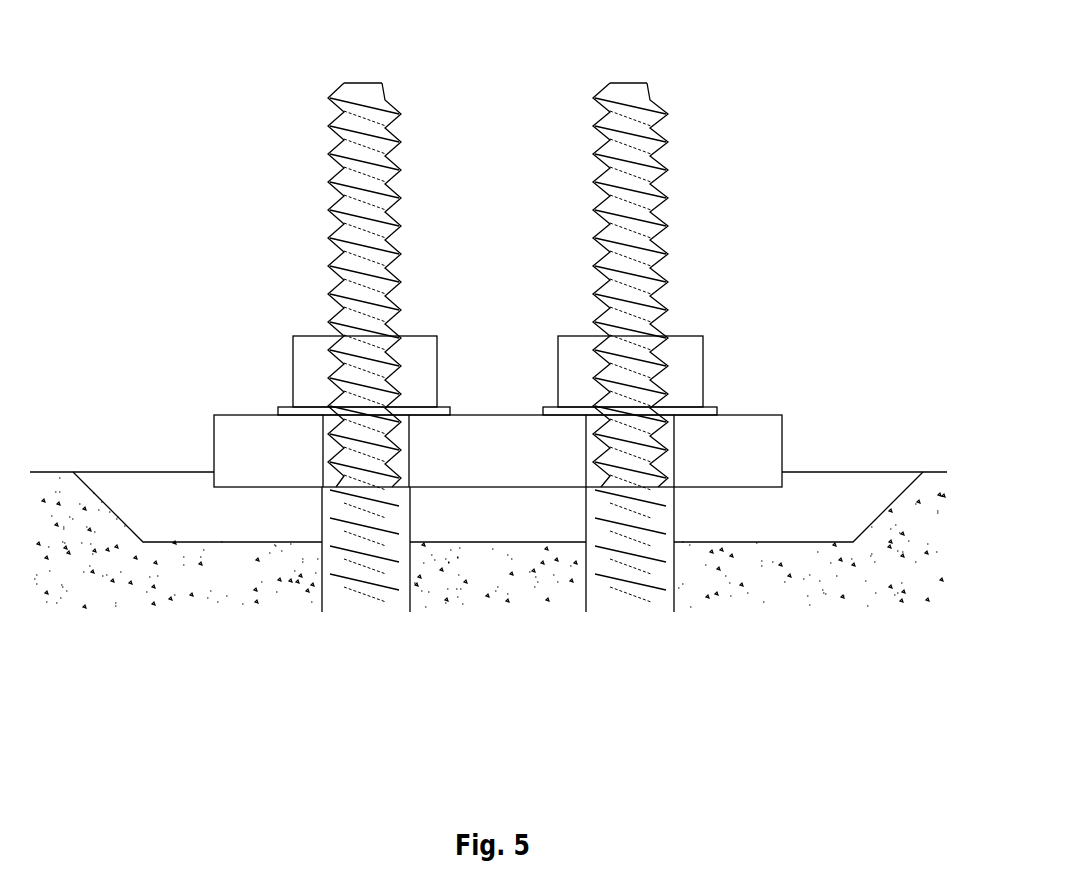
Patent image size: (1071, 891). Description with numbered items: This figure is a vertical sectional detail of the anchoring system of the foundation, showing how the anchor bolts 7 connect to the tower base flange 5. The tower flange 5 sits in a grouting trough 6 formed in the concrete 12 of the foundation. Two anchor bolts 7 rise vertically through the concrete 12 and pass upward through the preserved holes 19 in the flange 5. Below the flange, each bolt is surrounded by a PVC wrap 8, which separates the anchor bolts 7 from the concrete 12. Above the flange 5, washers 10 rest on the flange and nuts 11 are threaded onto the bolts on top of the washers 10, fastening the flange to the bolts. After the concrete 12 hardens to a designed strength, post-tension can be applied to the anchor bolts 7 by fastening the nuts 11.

The tower flange 5 is at (237, 412).
The grouting trough 6 is at (860, 420).
The anchor bolts 7 is at (333, 210).
The PVC wrap 8 is at (318, 590).
The washers 10 is at (715, 405).
The nuts 11 is at (690, 333).
The concrete 12 is at (792, 585).
The preserved holes in flange 19 is at (595, 445).